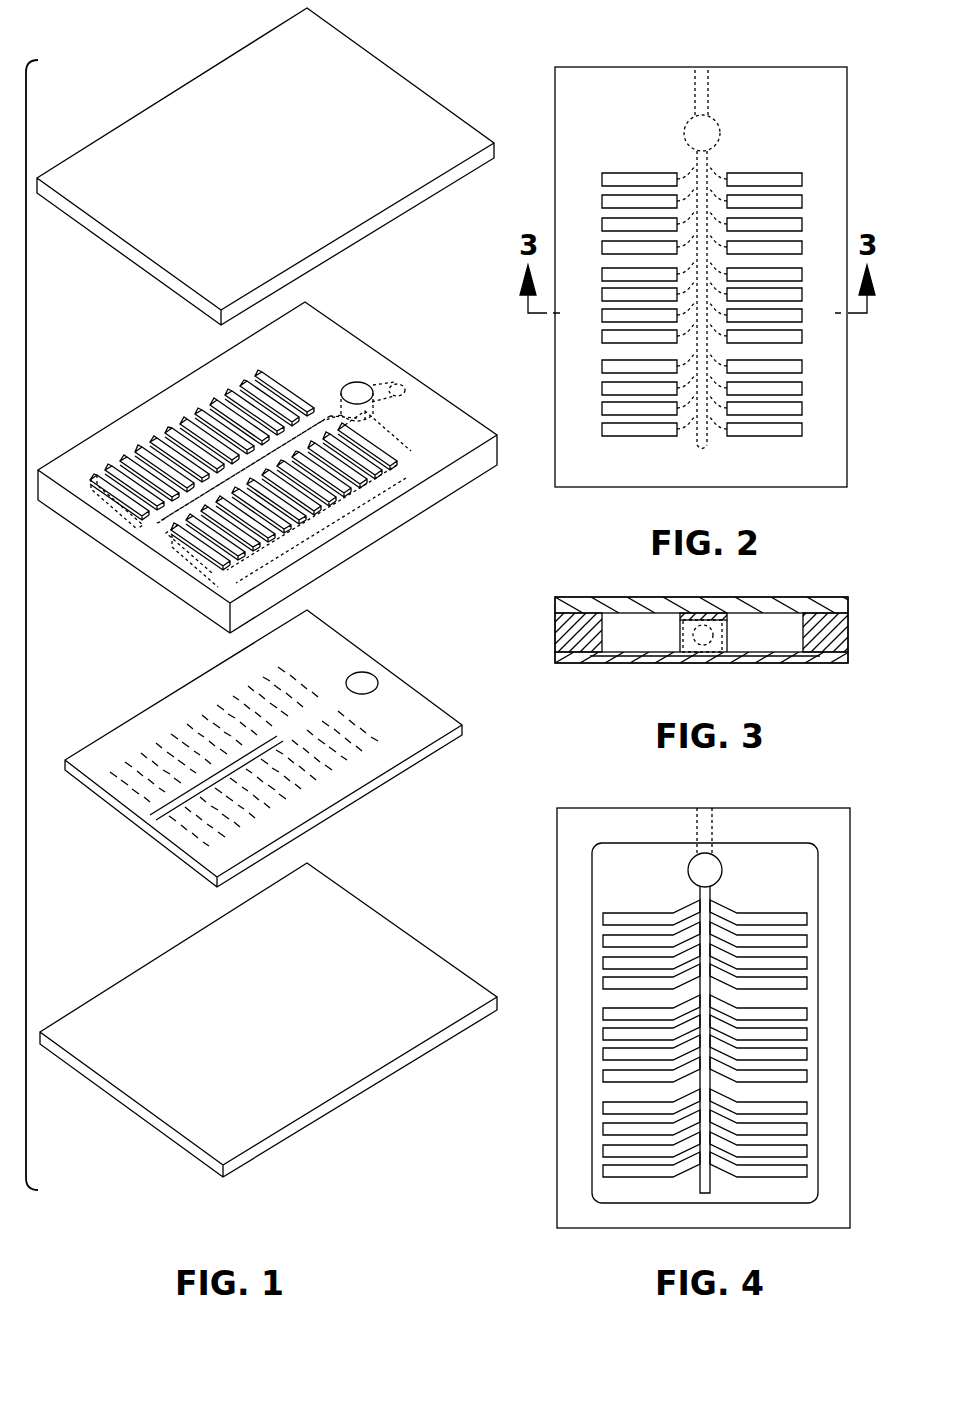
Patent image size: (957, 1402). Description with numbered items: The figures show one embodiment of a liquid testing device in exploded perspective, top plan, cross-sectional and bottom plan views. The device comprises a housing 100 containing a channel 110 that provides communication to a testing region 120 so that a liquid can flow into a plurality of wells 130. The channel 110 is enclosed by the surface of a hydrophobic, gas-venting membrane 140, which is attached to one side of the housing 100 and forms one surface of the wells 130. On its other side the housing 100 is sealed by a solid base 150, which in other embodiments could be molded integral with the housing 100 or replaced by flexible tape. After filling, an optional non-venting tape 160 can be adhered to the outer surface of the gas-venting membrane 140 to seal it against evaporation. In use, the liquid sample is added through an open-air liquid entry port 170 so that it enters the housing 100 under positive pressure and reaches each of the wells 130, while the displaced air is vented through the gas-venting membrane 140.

In FIG. 1, the housing 100 is at (432, 413).
In FIG. 3, the housing 100 is at (830, 638).
In FIG. 4, the housing 100 is at (575, 944).
In FIG. 1, the channel 110 is at (158, 548).
In FIG. 2, the channel 110 is at (705, 445).
In FIG. 1, the testing region 120 is at (182, 395).
In FIG. 1, the wells 130 is at (387, 447).
In FIG. 2, the wells 130 is at (773, 173).
In FIG. 1, the gas-venting membrane 140 is at (392, 689).
In FIG. 3, the gas-venting membrane 140 is at (687, 655).
In FIG. 4, the gas-venting membrane 140 is at (630, 887).
In FIG. 1, the solid base 150 is at (368, 100).
In FIG. 3, the solid base 150 is at (808, 598).
In FIG. 1, the tape 160 is at (318, 1035).
In FIG. 3, the tape 160 is at (597, 667).
In FIG. 2, the liquid entry port 170 is at (700, 78).